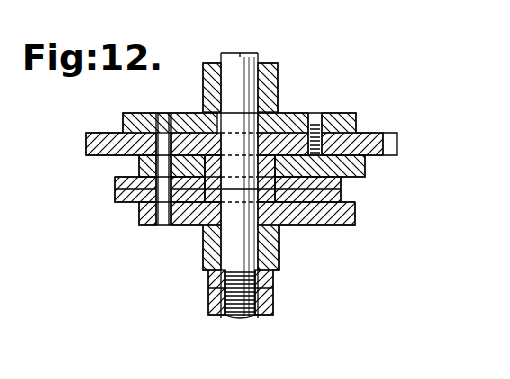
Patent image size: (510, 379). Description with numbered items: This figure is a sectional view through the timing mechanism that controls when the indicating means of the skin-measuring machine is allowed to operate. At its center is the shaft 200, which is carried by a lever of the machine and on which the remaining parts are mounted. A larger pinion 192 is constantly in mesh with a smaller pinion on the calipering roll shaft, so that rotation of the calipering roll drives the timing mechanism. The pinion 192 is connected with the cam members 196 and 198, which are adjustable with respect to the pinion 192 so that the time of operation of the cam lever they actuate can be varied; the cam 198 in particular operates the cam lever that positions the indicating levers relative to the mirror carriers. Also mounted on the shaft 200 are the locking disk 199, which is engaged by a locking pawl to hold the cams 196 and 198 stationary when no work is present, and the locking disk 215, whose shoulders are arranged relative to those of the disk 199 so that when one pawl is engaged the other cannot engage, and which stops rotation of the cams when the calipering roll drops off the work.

The shaft 200 is at (260, 55).
The locking disk 199 is at (357, 115).
The pinion 192 is at (398, 137).
The cam member 196 is at (366, 172).
The cam member 198 is at (343, 182).
The locking disk 215 is at (344, 226).